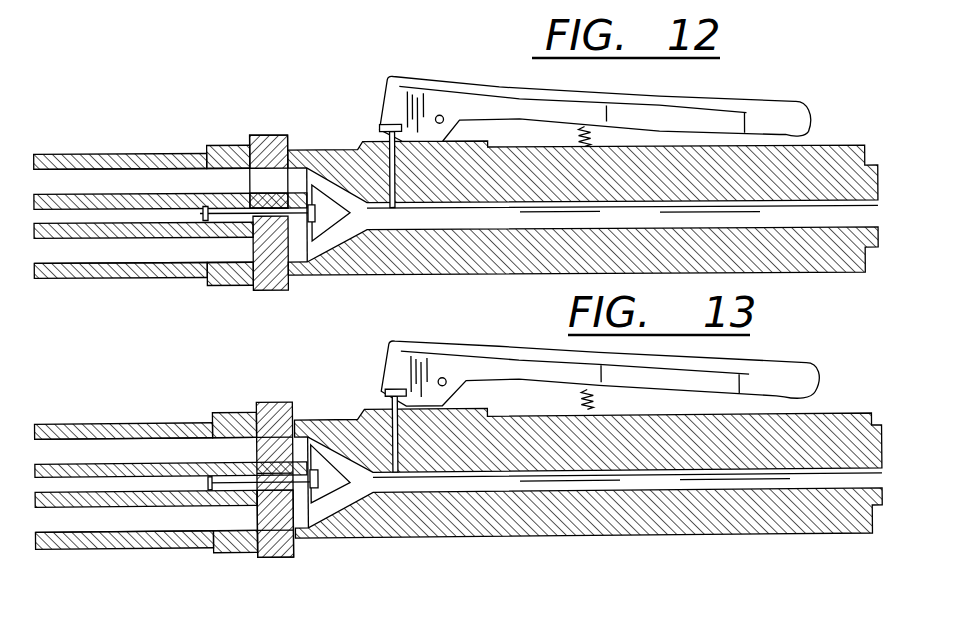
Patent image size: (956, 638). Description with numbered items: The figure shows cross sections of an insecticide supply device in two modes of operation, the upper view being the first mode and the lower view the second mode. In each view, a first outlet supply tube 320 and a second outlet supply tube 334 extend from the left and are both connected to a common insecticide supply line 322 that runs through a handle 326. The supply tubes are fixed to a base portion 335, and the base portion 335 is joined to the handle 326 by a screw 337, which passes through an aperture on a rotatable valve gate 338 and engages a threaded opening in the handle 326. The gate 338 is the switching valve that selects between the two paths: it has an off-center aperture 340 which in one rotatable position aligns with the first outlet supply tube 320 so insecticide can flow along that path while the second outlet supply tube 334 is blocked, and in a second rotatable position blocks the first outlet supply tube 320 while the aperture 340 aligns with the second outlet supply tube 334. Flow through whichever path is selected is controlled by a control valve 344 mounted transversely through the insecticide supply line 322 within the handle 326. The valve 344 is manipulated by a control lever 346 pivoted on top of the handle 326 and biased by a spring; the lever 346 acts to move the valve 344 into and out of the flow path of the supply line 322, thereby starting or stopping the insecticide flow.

In FIG. 12, the first outlet supply tube 320 is at (127, 152).
In FIG. 13, the first outlet supply tube 320 is at (127, 421).
In FIG. 12, the insecticide supply line 322 is at (800, 215).
In FIG. 13, the insecticide supply line 322 is at (767, 488).
In FIG. 12, the handle 326 is at (470, 267).
In FIG. 13, the handle 326 is at (507, 532).
In FIG. 12, the second outlet supply tube 334 is at (126, 278).
In FIG. 13, the second outlet supply tube 334 is at (132, 553).
In FIG. 12, the base portion 335 is at (230, 287).
In FIG. 13, the base portion 335 is at (242, 558).
In FIG. 12, the screw 337 is at (183, 172).
In FIG. 13, the screw 337 is at (263, 480).
In FIG. 12, the rotatable valve gate 338 is at (266, 292).
In FIG. 13, the rotatable valve gate 338 is at (281, 560).
In FIG. 12, the off-center aperture 340 is at (271, 182).
In FIG. 13, the off-center aperture 340 is at (274, 479).
In FIG. 12, the control valve 344 is at (380, 135).
In FIG. 13, the control valve 344 is at (380, 422).
In FIG. 12, the control lever 346 is at (752, 118).
In FIG. 13, the control lever 346 is at (808, 372).